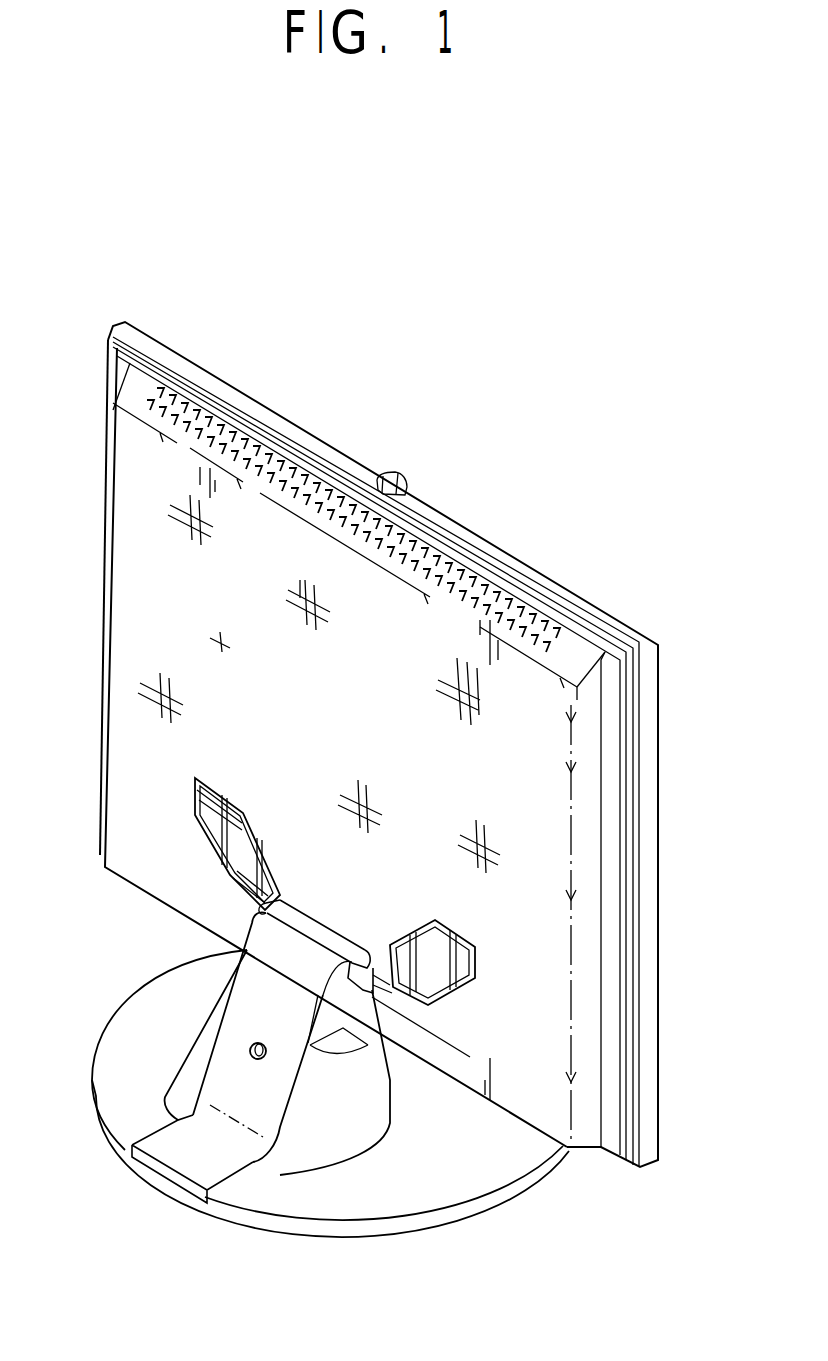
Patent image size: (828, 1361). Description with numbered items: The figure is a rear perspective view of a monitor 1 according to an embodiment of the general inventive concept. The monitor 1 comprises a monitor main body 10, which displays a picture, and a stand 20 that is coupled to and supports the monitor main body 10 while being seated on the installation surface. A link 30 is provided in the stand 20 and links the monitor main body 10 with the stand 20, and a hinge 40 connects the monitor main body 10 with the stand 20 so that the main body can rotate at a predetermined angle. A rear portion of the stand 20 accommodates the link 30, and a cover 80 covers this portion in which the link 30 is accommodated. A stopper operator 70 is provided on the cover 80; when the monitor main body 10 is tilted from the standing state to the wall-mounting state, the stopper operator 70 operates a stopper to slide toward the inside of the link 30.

The monitor 1 is at (481, 316).
The monitor main body 10 is at (462, 570).
The stand 20 is at (372, 1202).
The link 30 is at (258, 1037).
The hinge 40 is at (369, 936).
The stopper operator 70 is at (250, 1048).
The cover 80 is at (193, 1162).